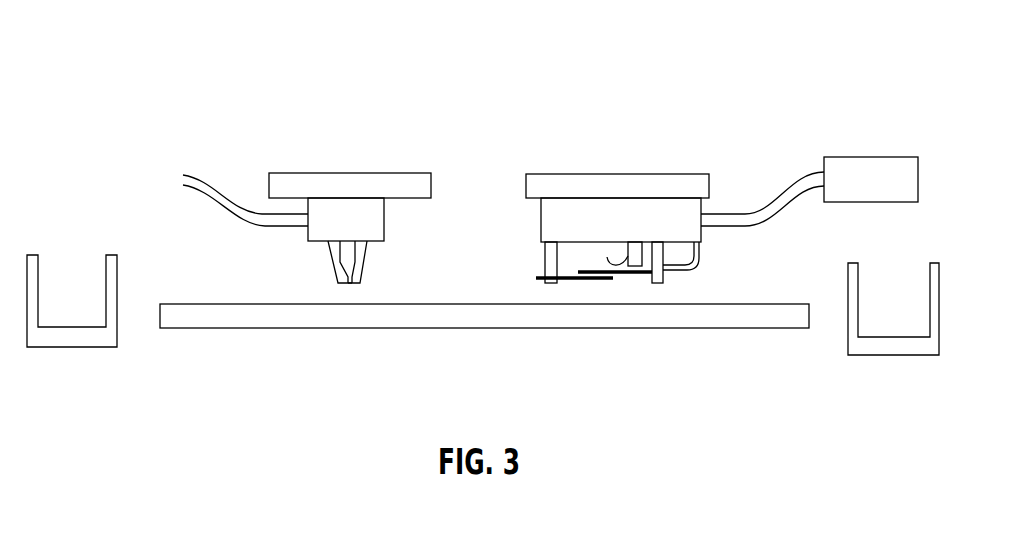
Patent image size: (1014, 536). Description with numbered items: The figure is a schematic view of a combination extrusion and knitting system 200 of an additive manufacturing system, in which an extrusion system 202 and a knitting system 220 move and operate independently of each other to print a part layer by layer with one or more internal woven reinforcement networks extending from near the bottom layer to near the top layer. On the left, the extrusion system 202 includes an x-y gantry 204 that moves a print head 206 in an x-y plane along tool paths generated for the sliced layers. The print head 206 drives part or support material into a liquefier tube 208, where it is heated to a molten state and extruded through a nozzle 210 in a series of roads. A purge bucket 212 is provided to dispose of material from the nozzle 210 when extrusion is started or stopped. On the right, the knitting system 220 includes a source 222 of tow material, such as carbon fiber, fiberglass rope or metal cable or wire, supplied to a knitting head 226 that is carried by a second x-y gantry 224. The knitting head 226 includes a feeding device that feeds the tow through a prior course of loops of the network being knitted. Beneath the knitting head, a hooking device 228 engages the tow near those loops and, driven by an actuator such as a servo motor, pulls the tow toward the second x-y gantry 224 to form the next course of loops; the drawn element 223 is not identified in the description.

The combination extrusion and knitting system 200 is at (708, 50).
The extrusion system 202 is at (341, 160).
The x-y gantry 204 is at (282, 173).
The print head 206 is at (386, 215).
The liquefier tube 208 is at (332, 258).
The nozzle 210 is at (350, 283).
The purge bucket 212 is at (82, 338).
The knitting system 220 is at (664, 143).
The source of tow material 222 is at (852, 157).
The support legs 223 is at (545, 258).
The second x-y gantry 224 is at (597, 174).
The knitting head 226 is at (703, 213).
The hooking device 228 is at (626, 274).